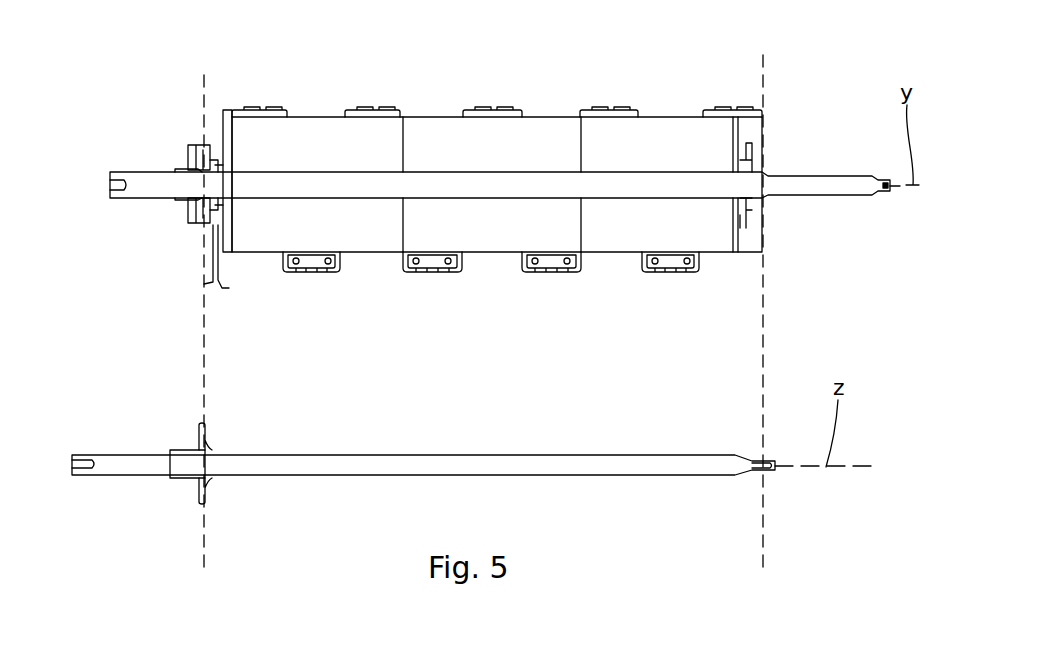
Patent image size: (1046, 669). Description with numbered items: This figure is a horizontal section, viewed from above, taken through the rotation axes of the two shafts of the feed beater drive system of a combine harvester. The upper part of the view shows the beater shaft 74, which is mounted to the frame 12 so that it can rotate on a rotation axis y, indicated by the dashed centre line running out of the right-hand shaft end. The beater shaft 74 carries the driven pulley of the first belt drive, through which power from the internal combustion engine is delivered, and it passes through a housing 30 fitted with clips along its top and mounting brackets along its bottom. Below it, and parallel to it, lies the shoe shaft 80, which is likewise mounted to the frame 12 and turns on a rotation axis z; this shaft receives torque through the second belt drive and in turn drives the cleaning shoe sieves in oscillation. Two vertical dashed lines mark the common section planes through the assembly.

The frame 12 is at (763, 304).
The stator housing 30 is at (316, 125).
The beater shaft 74 is at (797, 185).
The shoe shaft 80 is at (722, 468).